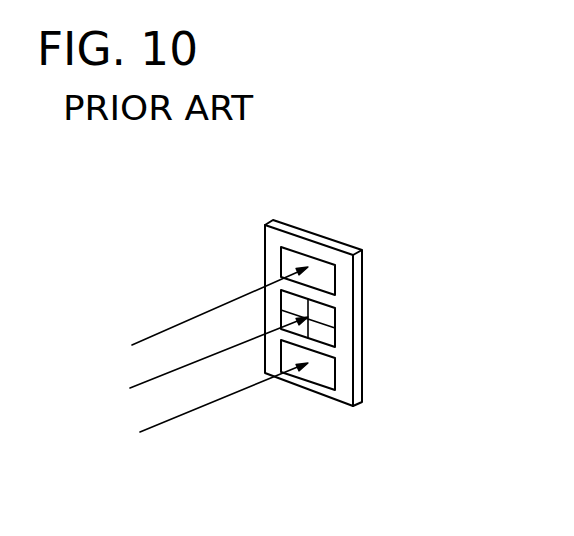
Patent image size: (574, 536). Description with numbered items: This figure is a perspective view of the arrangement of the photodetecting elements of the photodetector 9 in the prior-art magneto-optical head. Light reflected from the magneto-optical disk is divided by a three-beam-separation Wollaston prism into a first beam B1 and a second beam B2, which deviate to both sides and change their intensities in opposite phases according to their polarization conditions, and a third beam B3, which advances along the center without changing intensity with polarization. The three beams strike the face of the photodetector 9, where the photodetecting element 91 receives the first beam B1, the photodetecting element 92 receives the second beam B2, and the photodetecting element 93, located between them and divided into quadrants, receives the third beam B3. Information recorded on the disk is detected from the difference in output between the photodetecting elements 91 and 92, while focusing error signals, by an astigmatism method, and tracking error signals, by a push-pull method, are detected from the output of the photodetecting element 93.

The photodetector 9 is at (264, 257).
The photodetecting element 91 is at (327, 285).
The photodetecting element 92 is at (327, 375).
The photodetecting element 93 is at (327, 323).
The first beam B1 is at (152, 335).
The second beam B2 is at (178, 417).
The third beam B3 is at (153, 375).